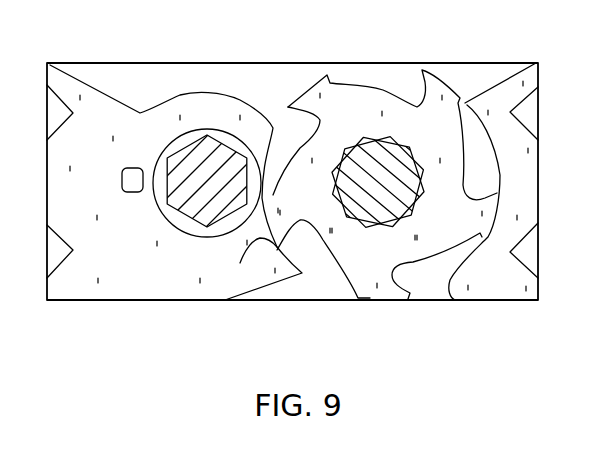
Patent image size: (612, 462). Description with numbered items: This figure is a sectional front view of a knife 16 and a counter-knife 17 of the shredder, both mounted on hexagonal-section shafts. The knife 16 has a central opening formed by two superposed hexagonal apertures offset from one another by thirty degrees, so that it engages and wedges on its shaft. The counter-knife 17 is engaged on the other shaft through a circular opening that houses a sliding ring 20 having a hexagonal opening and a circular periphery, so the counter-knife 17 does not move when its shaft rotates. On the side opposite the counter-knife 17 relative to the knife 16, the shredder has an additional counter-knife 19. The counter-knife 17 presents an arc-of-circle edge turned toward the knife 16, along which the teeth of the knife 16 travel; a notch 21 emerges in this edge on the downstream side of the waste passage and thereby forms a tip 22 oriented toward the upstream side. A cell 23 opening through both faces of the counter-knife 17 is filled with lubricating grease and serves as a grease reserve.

The knife 16 is at (398, 85).
The counter-knife 17 is at (117, 95).
The additional counter-knife 19 is at (495, 88).
The sliding ring 20 is at (183, 217).
The notch 21 is at (258, 248).
The tip 22 is at (268, 238).
The cell 23 is at (123, 186).